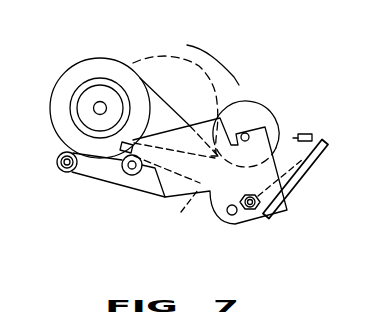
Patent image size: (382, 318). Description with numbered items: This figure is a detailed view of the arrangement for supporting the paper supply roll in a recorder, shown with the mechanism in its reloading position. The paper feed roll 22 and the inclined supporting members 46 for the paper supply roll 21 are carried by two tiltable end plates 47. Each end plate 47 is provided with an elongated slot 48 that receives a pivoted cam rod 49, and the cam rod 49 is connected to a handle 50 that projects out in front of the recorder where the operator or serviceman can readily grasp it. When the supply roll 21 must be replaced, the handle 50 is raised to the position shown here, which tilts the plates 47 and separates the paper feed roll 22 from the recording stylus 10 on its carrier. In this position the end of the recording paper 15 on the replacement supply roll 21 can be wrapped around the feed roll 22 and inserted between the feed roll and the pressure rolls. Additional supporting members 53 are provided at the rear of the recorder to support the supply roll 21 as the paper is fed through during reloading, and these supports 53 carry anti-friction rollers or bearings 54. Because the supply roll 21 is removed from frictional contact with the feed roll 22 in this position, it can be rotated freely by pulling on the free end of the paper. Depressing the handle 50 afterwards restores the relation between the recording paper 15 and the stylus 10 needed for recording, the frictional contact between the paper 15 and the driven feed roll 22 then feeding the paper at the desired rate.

The recording stylus 10 is at (299, 134).
The recording paper 15 is at (152, 91).
The paper supply roll 21 is at (67, 82).
The paper feed roll 22 is at (243, 111).
The inclined supporting member 46 is at (181, 212).
The tiltable end plate 47 is at (266, 215).
The elongated slot 48 is at (232, 216).
The pivoted cam rod 49 is at (284, 212).
The handle 50 is at (315, 166).
The additional supporting member 53 is at (95, 176).
The anti-friction roller 54 is at (58, 153).